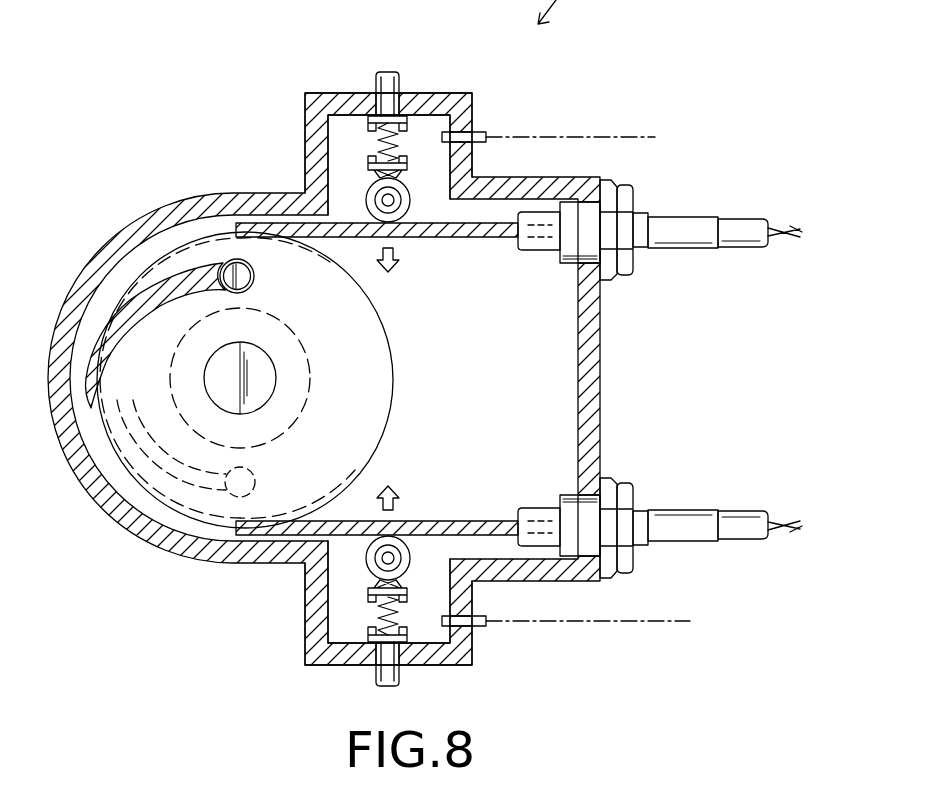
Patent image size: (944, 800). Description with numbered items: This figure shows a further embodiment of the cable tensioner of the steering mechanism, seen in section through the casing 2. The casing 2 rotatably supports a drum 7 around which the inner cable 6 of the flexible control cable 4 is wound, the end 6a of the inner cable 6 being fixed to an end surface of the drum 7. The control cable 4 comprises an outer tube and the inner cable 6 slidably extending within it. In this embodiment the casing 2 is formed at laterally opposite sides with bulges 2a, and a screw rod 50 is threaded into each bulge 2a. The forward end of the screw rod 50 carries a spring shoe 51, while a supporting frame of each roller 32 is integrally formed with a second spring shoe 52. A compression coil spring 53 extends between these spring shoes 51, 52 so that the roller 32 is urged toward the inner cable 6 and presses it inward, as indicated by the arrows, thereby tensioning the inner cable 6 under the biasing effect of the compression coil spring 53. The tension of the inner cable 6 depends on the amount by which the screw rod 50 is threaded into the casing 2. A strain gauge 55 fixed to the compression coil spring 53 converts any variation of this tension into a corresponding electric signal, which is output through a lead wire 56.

The casing 2 is at (172, 213).
The bulge 2a is at (312, 118).
The flexible control cable 4 is at (720, 181).
The inner cable 6 is at (483, 240).
The end of inner cable 6a is at (229, 262).
The drum 7 is at (390, 374).
The roller 32 is at (413, 208).
The screw rod 50 is at (390, 72).
The spring shoe 51 is at (403, 128).
The spring shoe 52 is at (366, 158).
The compression coil spring 53 is at (378, 140).
The strain gauge 55 is at (458, 128).
The lead wire 56 is at (606, 128).